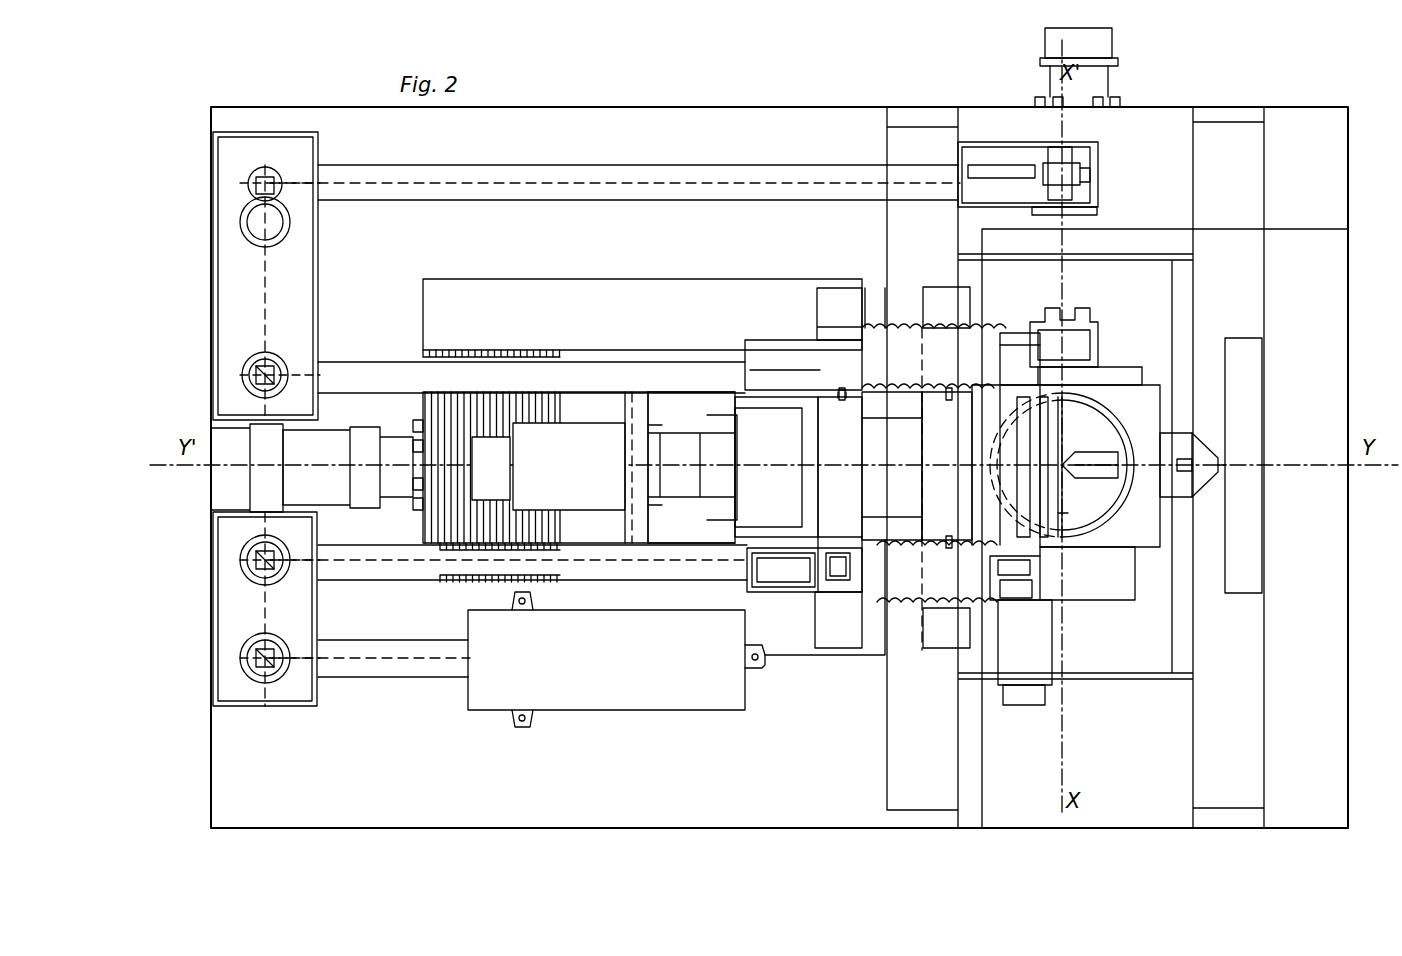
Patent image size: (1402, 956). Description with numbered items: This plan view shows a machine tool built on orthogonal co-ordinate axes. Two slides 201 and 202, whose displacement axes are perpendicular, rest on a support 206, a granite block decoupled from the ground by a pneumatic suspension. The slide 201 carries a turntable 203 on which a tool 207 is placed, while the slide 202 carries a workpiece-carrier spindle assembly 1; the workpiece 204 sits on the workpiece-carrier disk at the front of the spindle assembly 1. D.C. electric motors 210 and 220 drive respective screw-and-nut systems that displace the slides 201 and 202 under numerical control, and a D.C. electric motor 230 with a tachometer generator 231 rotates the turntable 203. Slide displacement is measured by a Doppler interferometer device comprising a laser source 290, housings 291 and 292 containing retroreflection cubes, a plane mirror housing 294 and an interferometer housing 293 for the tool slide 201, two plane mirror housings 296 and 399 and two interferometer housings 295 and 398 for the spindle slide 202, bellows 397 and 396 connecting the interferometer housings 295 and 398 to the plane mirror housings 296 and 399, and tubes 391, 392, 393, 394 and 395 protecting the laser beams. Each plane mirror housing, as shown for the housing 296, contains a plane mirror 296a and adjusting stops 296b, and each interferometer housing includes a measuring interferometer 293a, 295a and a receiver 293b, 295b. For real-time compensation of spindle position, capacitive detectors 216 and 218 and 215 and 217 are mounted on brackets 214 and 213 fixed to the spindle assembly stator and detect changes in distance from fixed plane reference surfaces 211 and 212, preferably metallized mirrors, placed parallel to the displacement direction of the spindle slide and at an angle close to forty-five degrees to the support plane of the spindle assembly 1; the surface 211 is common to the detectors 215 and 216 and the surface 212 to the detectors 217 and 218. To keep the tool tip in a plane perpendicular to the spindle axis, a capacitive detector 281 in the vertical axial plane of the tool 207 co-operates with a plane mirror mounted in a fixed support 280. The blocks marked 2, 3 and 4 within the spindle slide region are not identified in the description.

The workpiece-carrier spindle assembly 1 is at (776, 467).
The block 2 is at (569, 466).
The block 3 is at (680, 405).
The block 4 is at (491, 468).
The slide 201 is at (1152, 660).
The slide 202 is at (590, 397).
The turntable 203 is at (1098, 405).
The workpiece 204 is at (1062, 515).
The support 206 is at (813, 114).
The tool 207 is at (1070, 463).
The D.C. electric motor 210 is at (1108, 40).
The plane reference surface 211 is at (893, 510).
The plane reference surface 212 is at (896, 418).
The bracket 213 is at (985, 465).
The bracket 214 is at (840, 467).
The capacitive detector 215 is at (948, 532).
The capacitive detector 216 is at (840, 540).
The capacitive detector 217 is at (948, 402).
The capacitive detector 218 is at (840, 395).
The D.C. electric motor 220 is at (325, 500).
The D.C. electric motor 230 is at (1040, 672).
The tachometer generator 231 is at (1016, 705).
The fixed support 280 is at (1240, 594).
The detector 281 is at (1262, 466).
The laser source 290 is at (622, 711).
The housing 291 is at (288, 706).
The housing 292 is at (318, 255).
The interferometer housing 293 is at (1100, 186).
The measuring interferometer 293a is at (1072, 170).
The receiver 293b is at (984, 165).
The plane mirror housing 294 is at (1102, 322).
The interferometer housing 295 is at (805, 640).
The measuring interferometer 295a is at (838, 580).
The receiver 295b is at (775, 588).
The plane mirror housing 296 is at (1045, 582).
The plane mirror 296a is at (994, 592).
The adjusting stops 296b is at (1045, 555).
The tube 391 is at (414, 677).
The tube 392 is at (372, 580).
The tube 393 is at (278, 468).
The tube 394 is at (358, 363).
The tube 395 is at (570, 166).
The bellows 396 is at (906, 328).
The bellows 397 is at (898, 605).
The interferometer housing 398 is at (752, 340).
The plane mirror housing 399 is at (1012, 335).